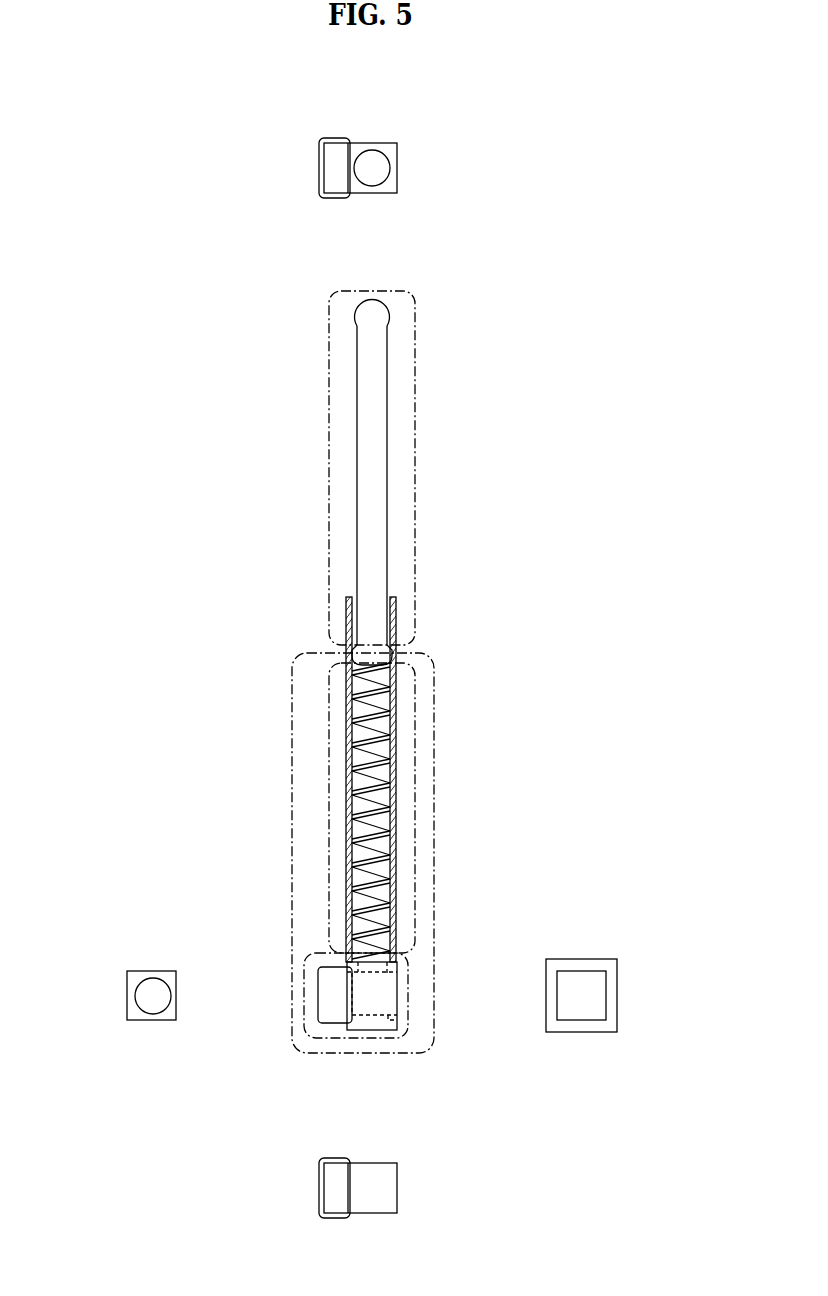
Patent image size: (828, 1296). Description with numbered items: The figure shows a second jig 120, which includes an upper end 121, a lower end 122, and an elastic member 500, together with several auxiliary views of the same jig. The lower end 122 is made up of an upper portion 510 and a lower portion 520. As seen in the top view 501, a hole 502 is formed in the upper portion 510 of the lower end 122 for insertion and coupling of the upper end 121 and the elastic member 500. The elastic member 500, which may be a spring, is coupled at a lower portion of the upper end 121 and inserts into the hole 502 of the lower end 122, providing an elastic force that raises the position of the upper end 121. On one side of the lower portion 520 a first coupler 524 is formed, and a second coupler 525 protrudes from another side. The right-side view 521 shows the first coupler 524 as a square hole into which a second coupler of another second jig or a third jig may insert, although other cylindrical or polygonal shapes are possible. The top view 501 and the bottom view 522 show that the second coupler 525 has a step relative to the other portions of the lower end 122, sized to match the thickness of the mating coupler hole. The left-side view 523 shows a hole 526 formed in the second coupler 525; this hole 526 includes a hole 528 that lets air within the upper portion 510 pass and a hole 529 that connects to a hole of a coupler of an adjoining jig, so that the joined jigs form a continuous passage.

The top view 501 is at (385, 113).
The hole 502 is at (392, 167).
The second coupler 525 is at (318, 168).
The upper end 121 is at (415, 470).
The second jig 120 is at (399, 689).
The lower end 122 is at (434, 744).
The upper portion 510 is at (415, 812).
The elastic member 500 is at (385, 887).
The lower portion 520 is at (408, 978).
The hole 528 is at (372, 969).
The hole 529 is at (392, 1017).
The hole 526 is at (323, 994).
The left-side view 523 is at (173, 945).
The right-side view 521 is at (604, 933).
The first coupler 524 is at (606, 995).
The bottom view 522 is at (382, 1137).